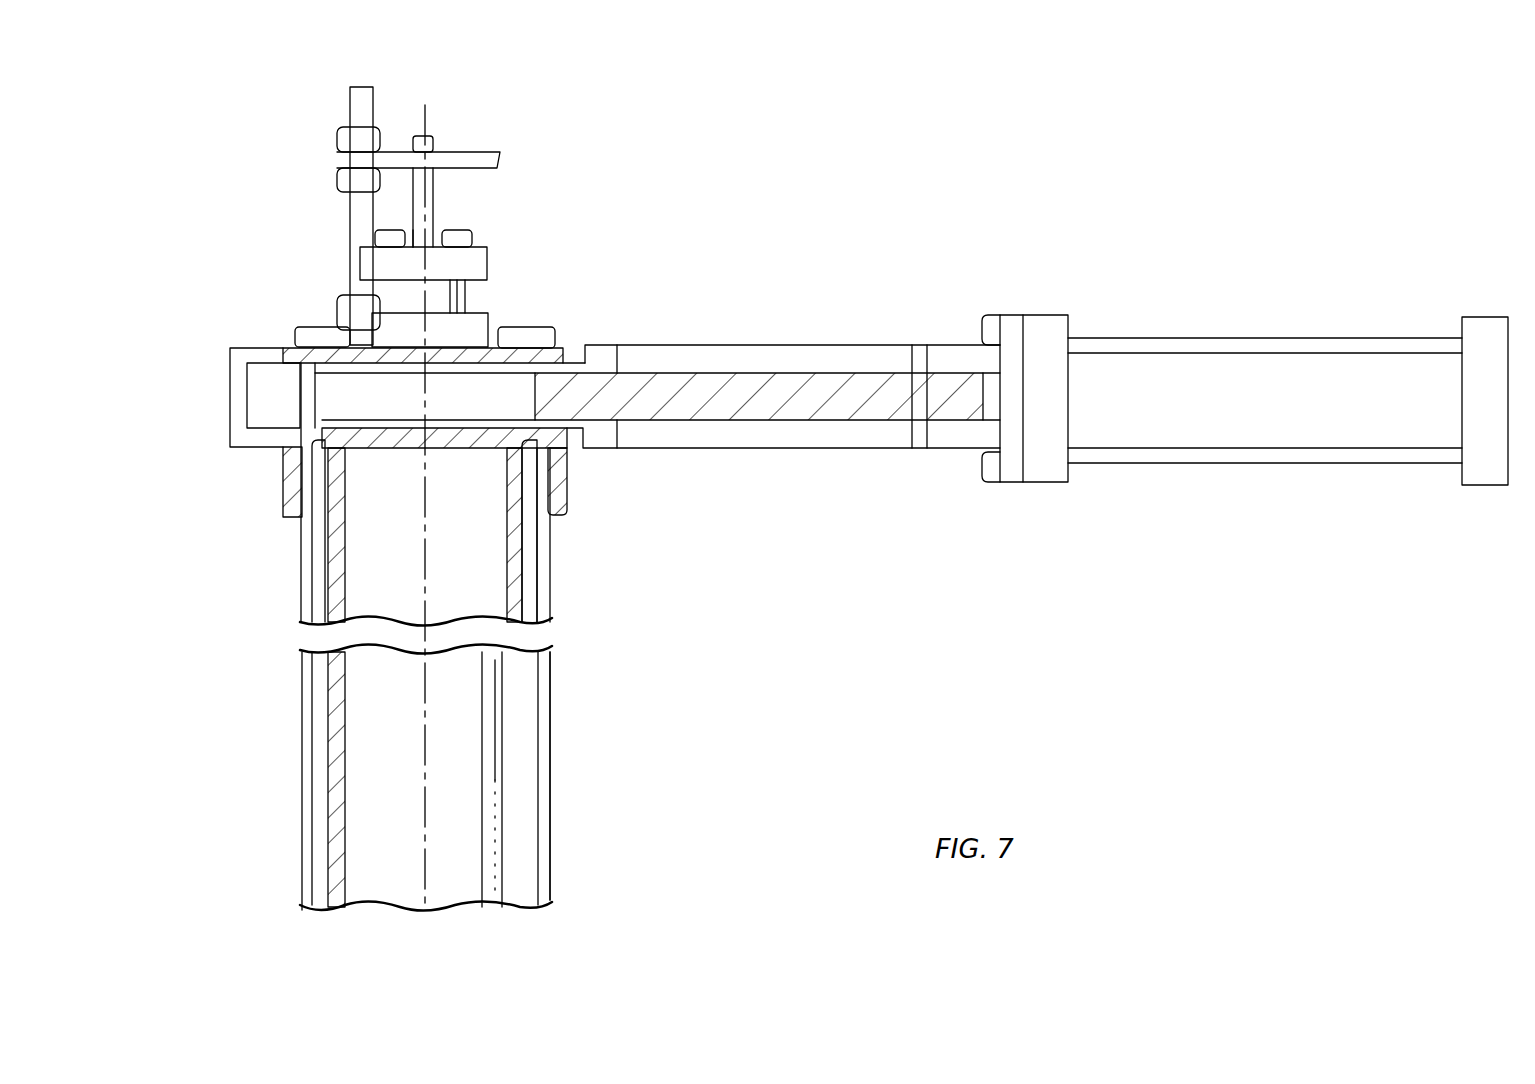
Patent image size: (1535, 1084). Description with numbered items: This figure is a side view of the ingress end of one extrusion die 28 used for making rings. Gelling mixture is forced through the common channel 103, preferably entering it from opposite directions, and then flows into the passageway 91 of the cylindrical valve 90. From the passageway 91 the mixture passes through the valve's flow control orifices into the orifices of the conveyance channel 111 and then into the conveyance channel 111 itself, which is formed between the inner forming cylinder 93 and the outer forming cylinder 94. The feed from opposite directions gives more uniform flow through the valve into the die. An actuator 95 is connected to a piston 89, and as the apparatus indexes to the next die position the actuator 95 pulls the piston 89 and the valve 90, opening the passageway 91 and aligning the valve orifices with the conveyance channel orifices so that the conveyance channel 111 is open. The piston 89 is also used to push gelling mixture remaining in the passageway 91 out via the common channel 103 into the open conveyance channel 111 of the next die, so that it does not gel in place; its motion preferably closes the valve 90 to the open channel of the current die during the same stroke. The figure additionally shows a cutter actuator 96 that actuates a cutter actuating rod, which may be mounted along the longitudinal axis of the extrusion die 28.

The extrusion die 28 is at (553, 732).
The piston 89 is at (720, 385).
The cylindrical valve 90 is at (562, 363).
The passageway 91 is at (468, 393).
The inner forming cylinder 93 is at (512, 542).
The outer forming cylinder 94 is at (550, 590).
The actuator 95 is at (1183, 372).
The cutter actuator 96 is at (472, 257).
The common channel 103 is at (263, 402).
The conveyance channel 111 is at (530, 527).